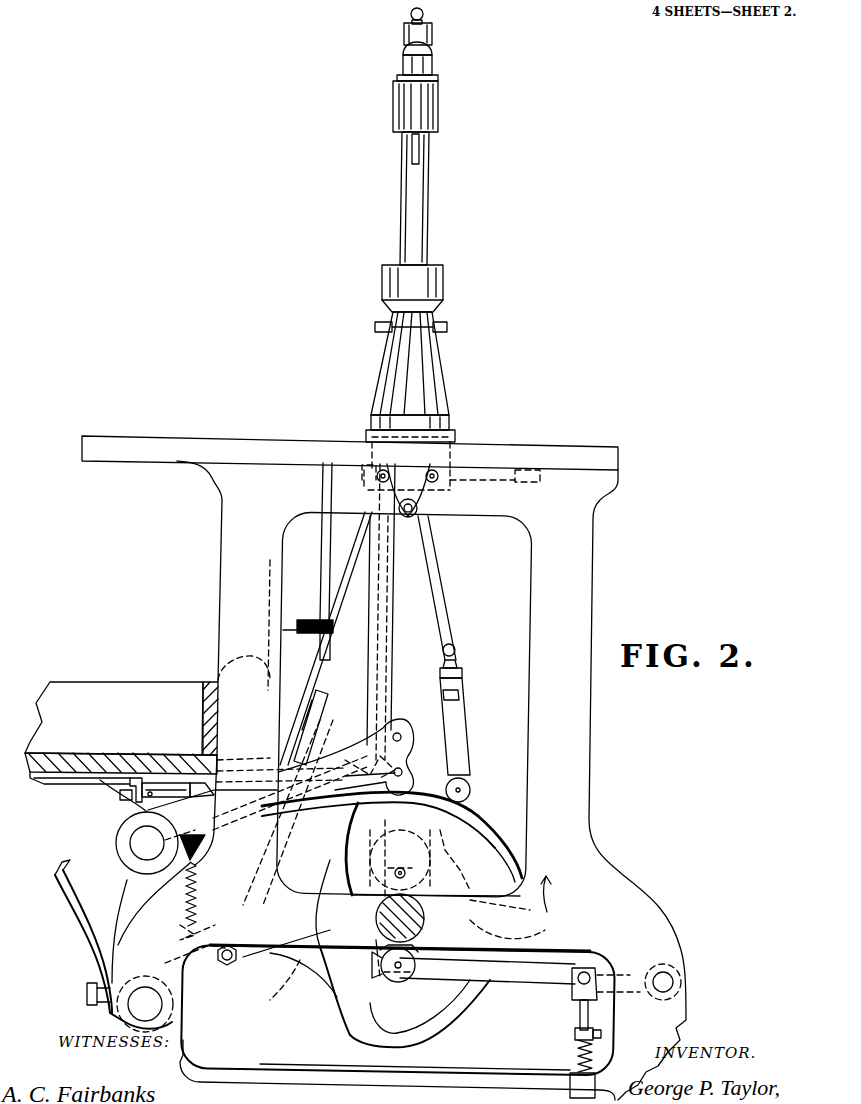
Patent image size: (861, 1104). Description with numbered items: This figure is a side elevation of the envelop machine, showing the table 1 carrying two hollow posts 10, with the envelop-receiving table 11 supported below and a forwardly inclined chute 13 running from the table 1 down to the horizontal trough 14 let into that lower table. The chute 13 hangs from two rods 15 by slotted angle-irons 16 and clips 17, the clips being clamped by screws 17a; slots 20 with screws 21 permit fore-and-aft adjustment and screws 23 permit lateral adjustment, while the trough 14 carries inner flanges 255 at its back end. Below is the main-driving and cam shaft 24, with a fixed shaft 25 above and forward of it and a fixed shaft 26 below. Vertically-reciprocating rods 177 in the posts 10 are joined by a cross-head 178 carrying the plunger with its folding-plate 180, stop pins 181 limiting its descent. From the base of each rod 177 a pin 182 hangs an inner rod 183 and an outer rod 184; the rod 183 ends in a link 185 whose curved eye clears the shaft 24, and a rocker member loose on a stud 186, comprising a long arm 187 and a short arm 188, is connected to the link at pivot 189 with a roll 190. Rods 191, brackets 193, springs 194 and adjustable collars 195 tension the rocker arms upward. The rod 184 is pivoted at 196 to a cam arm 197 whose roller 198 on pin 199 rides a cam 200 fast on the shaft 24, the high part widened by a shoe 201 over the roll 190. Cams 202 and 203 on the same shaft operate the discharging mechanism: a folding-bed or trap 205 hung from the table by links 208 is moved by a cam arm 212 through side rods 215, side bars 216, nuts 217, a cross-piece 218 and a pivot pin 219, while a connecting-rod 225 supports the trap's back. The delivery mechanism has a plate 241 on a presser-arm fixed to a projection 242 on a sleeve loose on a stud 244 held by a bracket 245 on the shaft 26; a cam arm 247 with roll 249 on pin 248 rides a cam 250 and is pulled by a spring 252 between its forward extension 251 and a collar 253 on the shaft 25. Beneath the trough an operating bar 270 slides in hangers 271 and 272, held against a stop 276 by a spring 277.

The table 1 is at (568, 456).
The hollow posts 10 is at (446, 392).
The envelop-receiving table 11 is at (48, 778).
The chute 13 is at (326, 638).
The trough 14 is at (114, 718).
The rods 15 is at (325, 563).
The slotted angle-irons 16 is at (308, 634).
The clips 17 is at (330, 634).
The screws 17a is at (330, 627).
The slots 20 is at (304, 620).
The screws 21 is at (296, 630).
The screws 23 is at (314, 620).
The main-driving and cam shaft 24 is at (427, 955).
The shaft 25 is at (140, 844).
The shaft 26 is at (140, 1004).
The vertically-reciprocating rods 177 is at (426, 200).
The cross-head 178 is at (438, 104).
The folding-plate 180 is at (447, 328).
The stop pins 181 is at (422, 153).
The pin 182 is at (418, 506).
The rod 183 is at (420, 620).
The rod 184 is at (398, 546).
The link 185 is at (380, 830).
The stud 186 is at (682, 983).
The long arm 187 is at (522, 982).
The short arm 188 is at (592, 990).
The pivot 189 is at (384, 975).
The roll 190 is at (400, 983).
The rods 191 is at (592, 978).
The brackets 193 is at (565, 1075).
The springs 194 is at (576, 1050).
The collars 195 is at (575, 1033).
The pivot 196 is at (404, 736).
The cam arm 197 is at (408, 752).
The roller 198 is at (412, 768).
The stud or pin 199 is at (420, 775).
The cam 200 is at (495, 856).
The shoe 201 is at (485, 824).
The cam 202 is at (458, 1030).
The cam 203 is at (342, 1010).
The folding-bed or trap 205 is at (455, 458).
The links 208 is at (520, 482).
The cam arm 212 is at (447, 797).
The side rods 215 is at (436, 562).
The side bars 216 is at (466, 700).
The nuts 217 is at (463, 676).
The stiffening plate or cross-piece 218 is at (452, 656).
The pivot pin 219 is at (470, 792).
The connecting-rod 225 is at (382, 592).
The plate 241 is at (303, 706).
The projection 242 is at (280, 950).
The horizontal stud 244 is at (230, 966).
The bracket 245 is at (172, 962).
The cam arm 247 is at (337, 982).
The stud or pin 248 is at (420, 873).
The roll 249 is at (336, 840).
The cam 250 is at (522, 927).
The forward extension 251 is at (180, 930).
The spring 252 is at (167, 894).
The collar 253 is at (142, 866).
The inner flanges 255 is at (212, 682).
The operating bar 270 is at (166, 802).
The hanger 271 is at (168, 783).
The hanger 272 is at (224, 770).
The stop 276 is at (118, 790).
The spring 277 is at (136, 784).